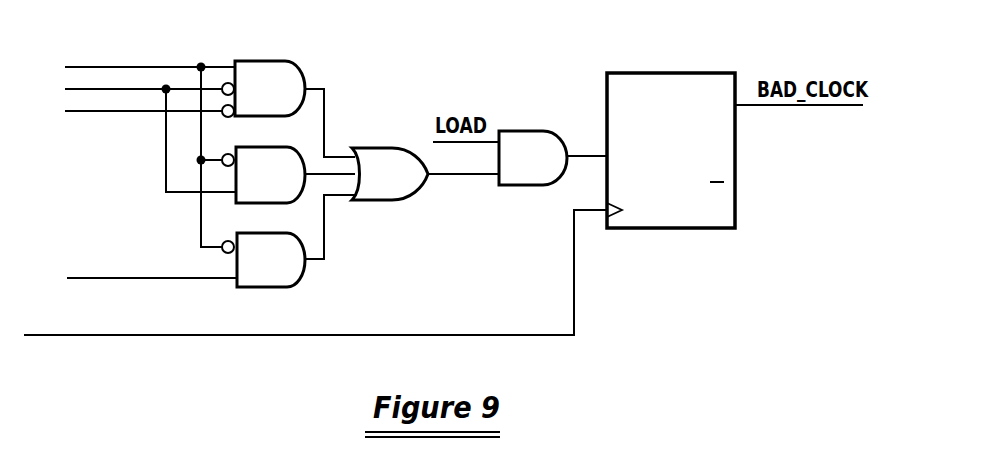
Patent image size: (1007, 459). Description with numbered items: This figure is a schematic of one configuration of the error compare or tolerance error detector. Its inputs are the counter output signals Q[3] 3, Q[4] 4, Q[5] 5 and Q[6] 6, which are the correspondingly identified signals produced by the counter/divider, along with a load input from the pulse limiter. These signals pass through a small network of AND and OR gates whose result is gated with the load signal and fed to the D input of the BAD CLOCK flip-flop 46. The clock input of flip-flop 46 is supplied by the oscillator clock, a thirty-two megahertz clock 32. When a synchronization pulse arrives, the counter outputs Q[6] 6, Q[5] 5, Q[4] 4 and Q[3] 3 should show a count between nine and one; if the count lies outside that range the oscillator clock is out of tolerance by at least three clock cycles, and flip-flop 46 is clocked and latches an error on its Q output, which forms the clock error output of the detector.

The BAD CLOCK flip-flop 46 is at (668, 73).
The 32 MHz clock signal 32 is at (315, 272).
The counter output Q[3] 3 is at (131, 148).
The counter output Q[4] 4 is at (132, 277).
The counter output Q[5] 5 is at (131, 132).
The counter output Q[6] 6 is at (124, 107).